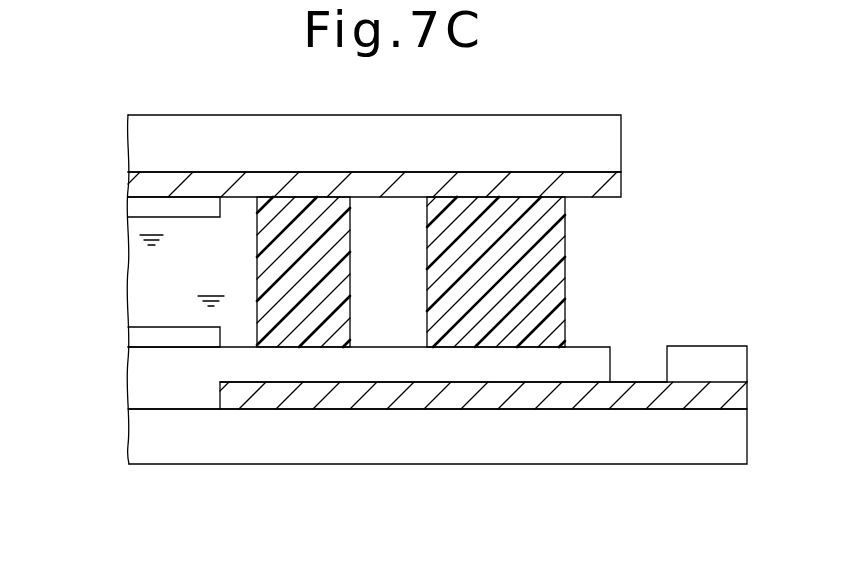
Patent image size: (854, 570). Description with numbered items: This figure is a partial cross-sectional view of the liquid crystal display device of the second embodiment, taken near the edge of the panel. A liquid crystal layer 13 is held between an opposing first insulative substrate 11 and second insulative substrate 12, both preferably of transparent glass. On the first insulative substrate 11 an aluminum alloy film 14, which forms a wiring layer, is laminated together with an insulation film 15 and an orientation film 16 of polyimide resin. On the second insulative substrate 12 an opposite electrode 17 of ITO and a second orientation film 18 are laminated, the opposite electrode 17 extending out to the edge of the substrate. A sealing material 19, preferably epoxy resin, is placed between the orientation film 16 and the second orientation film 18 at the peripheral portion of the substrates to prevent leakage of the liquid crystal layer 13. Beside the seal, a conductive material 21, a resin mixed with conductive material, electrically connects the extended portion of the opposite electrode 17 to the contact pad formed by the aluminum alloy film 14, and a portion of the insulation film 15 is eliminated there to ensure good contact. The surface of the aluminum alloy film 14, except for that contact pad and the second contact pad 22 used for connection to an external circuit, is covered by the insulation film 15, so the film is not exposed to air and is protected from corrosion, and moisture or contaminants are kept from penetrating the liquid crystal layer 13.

The first insulative substrate 11 is at (566, 452).
The second insulative substrate 12 is at (621, 138).
The liquid crystal layer 13 is at (130, 270).
The aluminum alloy film 14 is at (407, 403).
The insulation film 15 is at (130, 372).
The orientation film 16 is at (130, 336).
The opposite electrode 17 is at (128, 178).
The second orientation film 18 is at (128, 208).
The sealing material 19 is at (257, 270).
The conductive material 21 is at (565, 233).
The second contact pad 22 is at (639, 382).